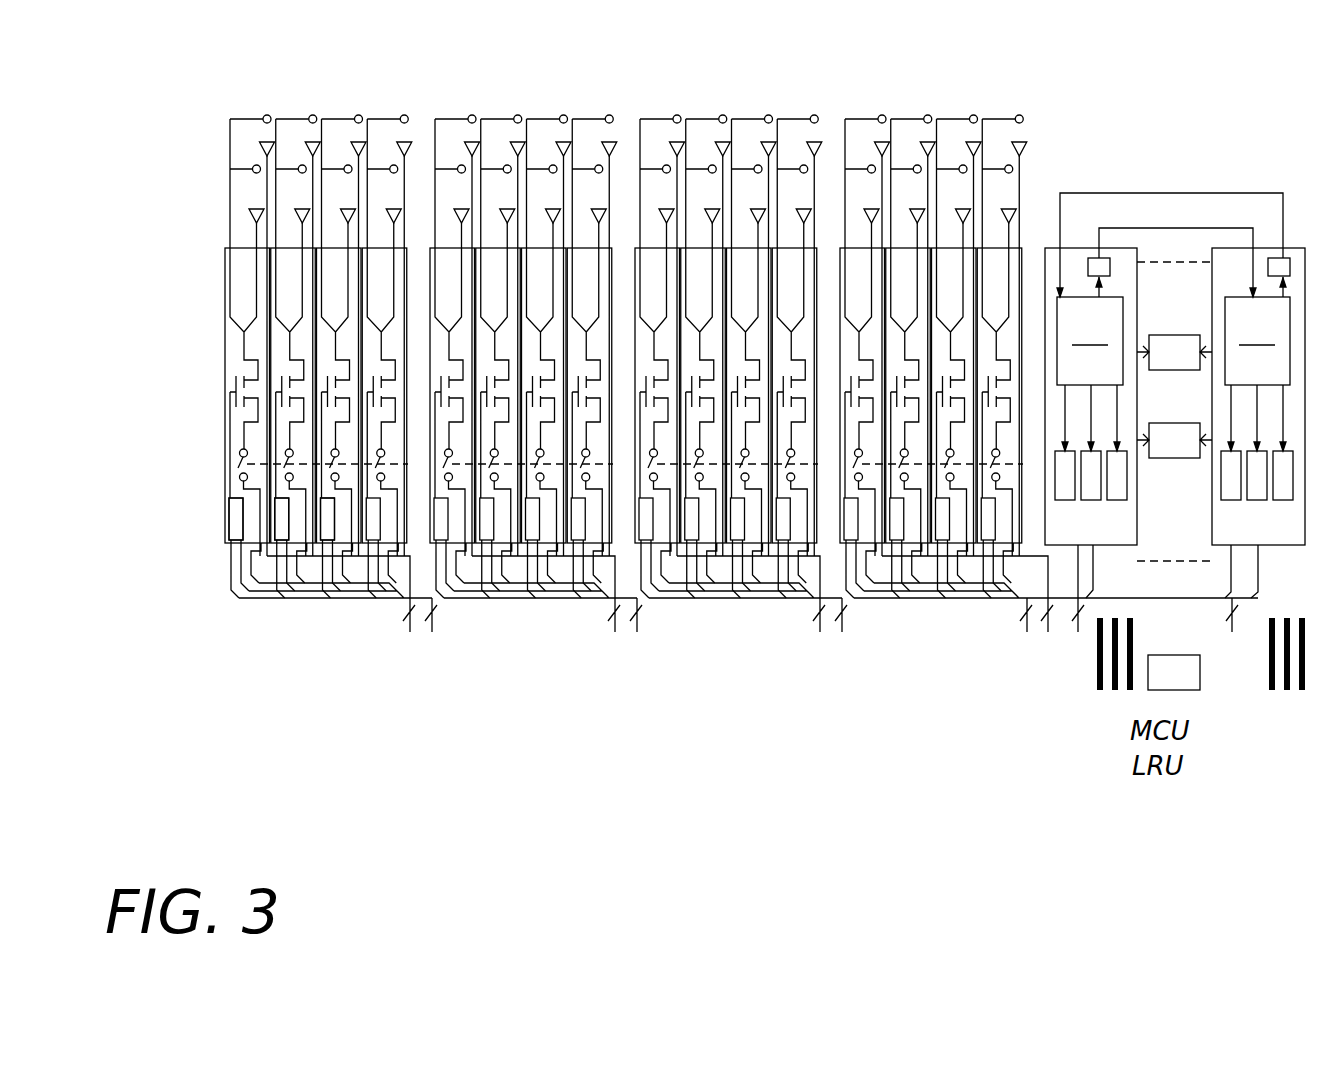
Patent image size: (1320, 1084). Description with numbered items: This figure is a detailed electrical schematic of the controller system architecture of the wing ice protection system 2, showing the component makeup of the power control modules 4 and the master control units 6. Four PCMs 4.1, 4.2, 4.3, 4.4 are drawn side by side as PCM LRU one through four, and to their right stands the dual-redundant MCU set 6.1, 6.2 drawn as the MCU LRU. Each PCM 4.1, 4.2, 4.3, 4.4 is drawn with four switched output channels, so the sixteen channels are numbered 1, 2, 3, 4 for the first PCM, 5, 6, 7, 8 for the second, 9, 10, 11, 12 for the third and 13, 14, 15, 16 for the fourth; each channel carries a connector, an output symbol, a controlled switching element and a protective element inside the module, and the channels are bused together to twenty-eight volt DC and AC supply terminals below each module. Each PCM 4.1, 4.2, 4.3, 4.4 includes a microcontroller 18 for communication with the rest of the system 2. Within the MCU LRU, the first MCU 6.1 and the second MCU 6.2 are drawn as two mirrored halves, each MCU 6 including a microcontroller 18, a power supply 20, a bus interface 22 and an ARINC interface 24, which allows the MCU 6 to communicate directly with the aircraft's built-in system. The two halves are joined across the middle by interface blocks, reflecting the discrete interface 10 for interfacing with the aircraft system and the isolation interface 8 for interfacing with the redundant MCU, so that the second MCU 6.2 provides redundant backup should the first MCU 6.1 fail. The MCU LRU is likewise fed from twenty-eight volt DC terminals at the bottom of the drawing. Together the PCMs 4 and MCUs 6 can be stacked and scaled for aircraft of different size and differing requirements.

The load channel 1 is at (250, 335).
The wing ice protection system 2 is at (296, 335).
The load channel 3 is at (342, 335).
The power control module 4 is at (387, 335).
The load channel 5 is at (455, 335).
The master control unit 6 is at (501, 335).
The load channel 7 is at (547, 335).
The isolation interface 8 is at (592, 335).
The load channel 9 is at (660, 335).
The discrete interface 10 is at (706, 335).
The load channel 11 is at (752, 335).
The load channel 12 is at (797, 335).
The load channel 13 is at (865, 335).
The load channel 14 is at (911, 335).
The load channel 15 is at (957, 335).
The load channel 16 is at (1002, 335).
The microcontroller 18 is at (326, 545).
The power supply 20 is at (1231, 500).
The bus interface 22 is at (1245, 478).
The ARINC interface 24 is at (1275, 458).
The first MCU 6.1 is at (1043, 245).
The second MCU 6.2 is at (1308, 245).
The first PCM 4.1 is at (347, 765).
The second PCM 4.2 is at (527, 765).
The third PCM 4.3 is at (722, 765).
The fourth PCM 4.4 is at (927, 765).